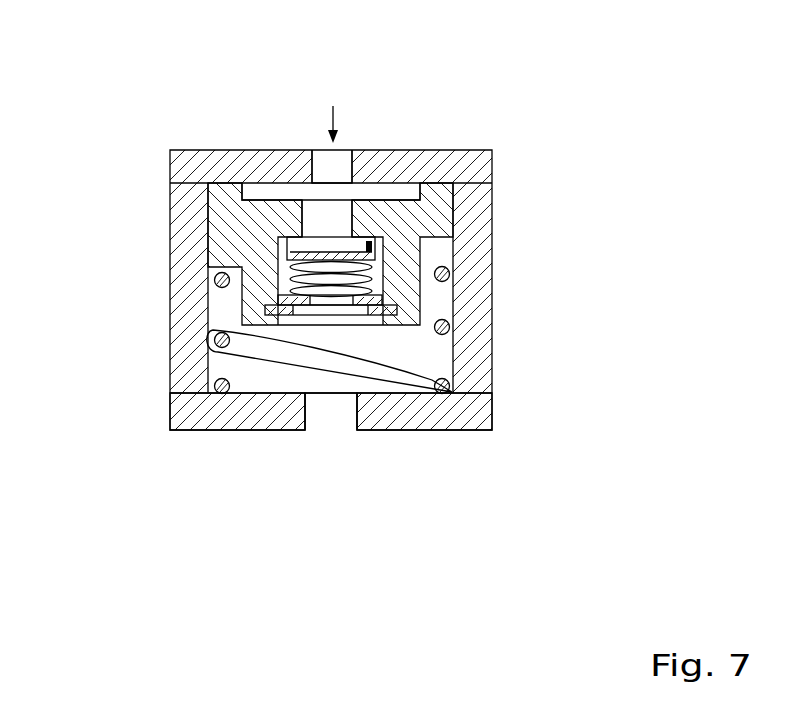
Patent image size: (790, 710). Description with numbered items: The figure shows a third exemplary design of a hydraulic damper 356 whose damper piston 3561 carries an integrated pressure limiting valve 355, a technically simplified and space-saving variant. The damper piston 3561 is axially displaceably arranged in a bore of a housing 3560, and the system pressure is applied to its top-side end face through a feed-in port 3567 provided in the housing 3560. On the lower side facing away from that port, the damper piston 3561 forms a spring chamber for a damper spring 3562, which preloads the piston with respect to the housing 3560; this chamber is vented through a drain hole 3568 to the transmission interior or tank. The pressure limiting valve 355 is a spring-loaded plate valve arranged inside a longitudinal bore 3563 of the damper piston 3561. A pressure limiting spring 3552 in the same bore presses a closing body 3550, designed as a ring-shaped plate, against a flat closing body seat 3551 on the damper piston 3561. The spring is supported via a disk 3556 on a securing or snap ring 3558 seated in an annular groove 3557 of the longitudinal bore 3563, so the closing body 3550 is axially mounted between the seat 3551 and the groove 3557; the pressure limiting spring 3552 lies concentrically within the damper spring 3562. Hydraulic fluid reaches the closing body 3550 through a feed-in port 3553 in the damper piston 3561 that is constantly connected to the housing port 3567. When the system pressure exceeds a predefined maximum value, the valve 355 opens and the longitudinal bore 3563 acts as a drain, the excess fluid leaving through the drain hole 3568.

The hydraulic damper 356 is at (578, 118).
The housing 3560 is at (493, 183).
The feed-in port 3567 is at (342, 172).
The closing body seat 3551 is at (397, 268).
The damper piston 3561 is at (433, 213).
The feed-in port 3553 is at (305, 230).
The closing body 3550 is at (303, 238).
The pressure limiting spring 3552 is at (293, 268).
The longitudinal bore 3563 is at (347, 322).
The securing or snap ring 3558 is at (403, 323).
The pressure limiting valve 355 is at (425, 283).
The annular groove 3557 is at (420, 312).
The damper spring 3562 is at (240, 326).
The drain hole 3568 is at (320, 432).
The disk 3556 is at (367, 325).